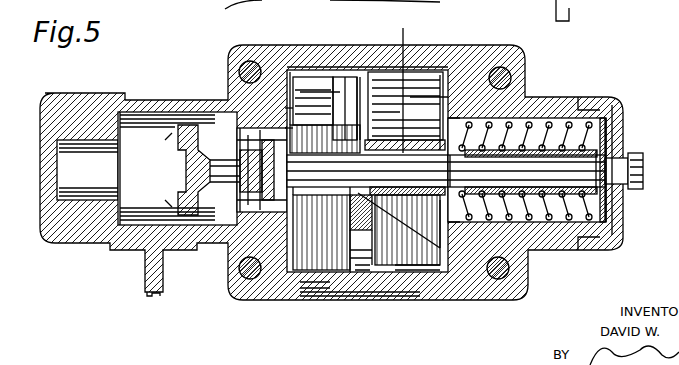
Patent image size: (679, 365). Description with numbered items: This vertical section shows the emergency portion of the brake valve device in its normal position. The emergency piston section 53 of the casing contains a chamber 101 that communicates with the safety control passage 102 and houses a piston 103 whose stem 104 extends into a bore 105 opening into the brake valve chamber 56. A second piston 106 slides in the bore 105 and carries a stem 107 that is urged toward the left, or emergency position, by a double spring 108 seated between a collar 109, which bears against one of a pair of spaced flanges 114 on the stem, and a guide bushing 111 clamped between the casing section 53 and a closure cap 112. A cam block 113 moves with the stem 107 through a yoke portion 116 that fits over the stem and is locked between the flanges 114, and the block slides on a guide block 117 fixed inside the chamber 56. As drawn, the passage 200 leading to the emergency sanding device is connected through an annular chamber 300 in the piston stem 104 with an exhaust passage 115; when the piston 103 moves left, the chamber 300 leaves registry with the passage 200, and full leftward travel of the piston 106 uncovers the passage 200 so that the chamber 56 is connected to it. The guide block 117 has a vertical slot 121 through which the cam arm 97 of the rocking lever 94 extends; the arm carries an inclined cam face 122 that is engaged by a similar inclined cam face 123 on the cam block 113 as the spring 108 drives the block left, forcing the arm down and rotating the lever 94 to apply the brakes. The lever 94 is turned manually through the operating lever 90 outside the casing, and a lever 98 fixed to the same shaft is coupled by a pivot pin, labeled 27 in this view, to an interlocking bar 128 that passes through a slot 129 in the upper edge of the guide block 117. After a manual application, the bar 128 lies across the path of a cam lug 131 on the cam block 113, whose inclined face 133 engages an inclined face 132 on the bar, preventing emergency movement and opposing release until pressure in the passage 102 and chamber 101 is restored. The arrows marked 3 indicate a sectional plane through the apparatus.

The section line 3 is at (404, 30).
The valve element 27 is at (325, 139).
The emergency piston section 53 is at (125, 92).
The brake valve chamber 56 is at (407, 277).
The rocking lever 90 is at (147, 295).
The rocking lever 94 is at (367, 252).
The cam arm 97 is at (348, 227).
The lever 98 is at (300, 92).
The chamber 101 is at (128, 218).
The safety control passage 102 is at (340, 0).
The piston 103 is at (200, 123).
The stem 104 is at (287, 113).
The bore 105 is at (232, 262).
The piston 106 is at (286, 110).
The stem 107 is at (356, 200).
The double spring 108 is at (558, 127).
The collar 109 is at (458, 118).
The guide bushing 111 is at (613, 120).
The closure cap 112 is at (622, 233).
The cam block 113 is at (240, 3).
The flanges 114 is at (465, 170).
The exhaust passage 115 is at (206, 110).
The yoke portion 116 is at (452, 218).
The guide block 117 is at (290, 72).
The vertical slot 121 is at (345, 252).
The inclined cam face 122 is at (374, 220).
The inclined cam face 123 is at (435, 283).
The interlocking bar 128 is at (415, 97).
The slot 129 is at (327, 72).
The cam lug 131 is at (440, 75).
The inclined face 132 is at (372, 100).
The inclined face 133 is at (367, 169).
The passage 200 is at (326, 5).
The annular chamber 300 is at (212, 238).